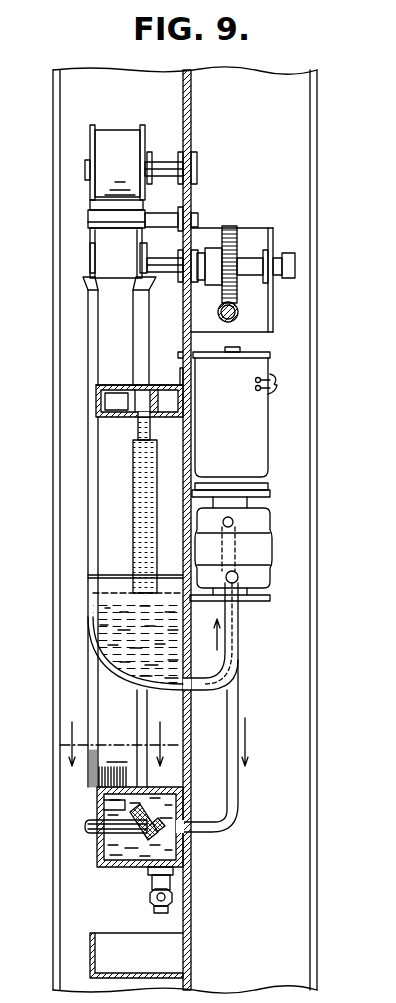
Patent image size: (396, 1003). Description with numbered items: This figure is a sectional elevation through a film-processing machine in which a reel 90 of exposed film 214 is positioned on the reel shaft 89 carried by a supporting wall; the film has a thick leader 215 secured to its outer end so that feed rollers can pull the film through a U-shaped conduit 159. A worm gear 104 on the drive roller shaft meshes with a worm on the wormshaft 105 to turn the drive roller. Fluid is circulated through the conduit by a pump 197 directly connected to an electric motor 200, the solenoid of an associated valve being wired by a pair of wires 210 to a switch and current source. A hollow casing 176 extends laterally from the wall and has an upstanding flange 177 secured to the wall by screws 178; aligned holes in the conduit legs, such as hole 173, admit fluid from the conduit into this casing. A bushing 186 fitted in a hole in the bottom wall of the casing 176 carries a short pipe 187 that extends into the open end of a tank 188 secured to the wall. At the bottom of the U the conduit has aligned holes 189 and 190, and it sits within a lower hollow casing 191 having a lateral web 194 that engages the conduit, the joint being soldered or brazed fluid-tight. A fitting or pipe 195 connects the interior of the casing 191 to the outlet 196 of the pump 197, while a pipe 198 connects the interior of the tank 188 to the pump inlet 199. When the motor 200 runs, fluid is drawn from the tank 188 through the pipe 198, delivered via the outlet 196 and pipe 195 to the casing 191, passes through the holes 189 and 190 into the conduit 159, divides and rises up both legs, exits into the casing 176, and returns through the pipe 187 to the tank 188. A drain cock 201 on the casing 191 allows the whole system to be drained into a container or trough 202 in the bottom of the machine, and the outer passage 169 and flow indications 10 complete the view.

The exposed film 214 is at (110, 145).
The reel 90 is at (143, 133).
The reel shaft 89 is at (150, 164).
The worm gear 104 is at (228, 230).
The wormshaft 105 is at (235, 320).
The leader 215 is at (107, 268).
The outer tube 169 is at (105, 298).
The U-shaped conduit 159 is at (128, 325).
The upstanding flange 177 is at (180, 358).
The hollow casing 176 is at (116, 383).
The screws 178 is at (180, 377).
The hole 173 is at (110, 402).
The bushing 186 is at (134, 425).
The short pipe 187 is at (133, 498).
The tank 188 is at (95, 585).
The flow direction 10 is at (120, 735).
The electric motor 200 is at (255, 437).
The wires 210 is at (280, 396).
The pump 197 is at (255, 547).
The inlet 199 is at (233, 523).
The outlet 196 is at (240, 577).
The pipe 198 is at (205, 690).
The fitting or pipe 195 is at (200, 826).
The hole 190 is at (98, 843).
The hole 189 is at (113, 808).
The lateral web 194 is at (152, 822).
The hollow casing 191 is at (120, 869).
The drain cock 201 is at (150, 897).
The container or trough 202 is at (92, 955).